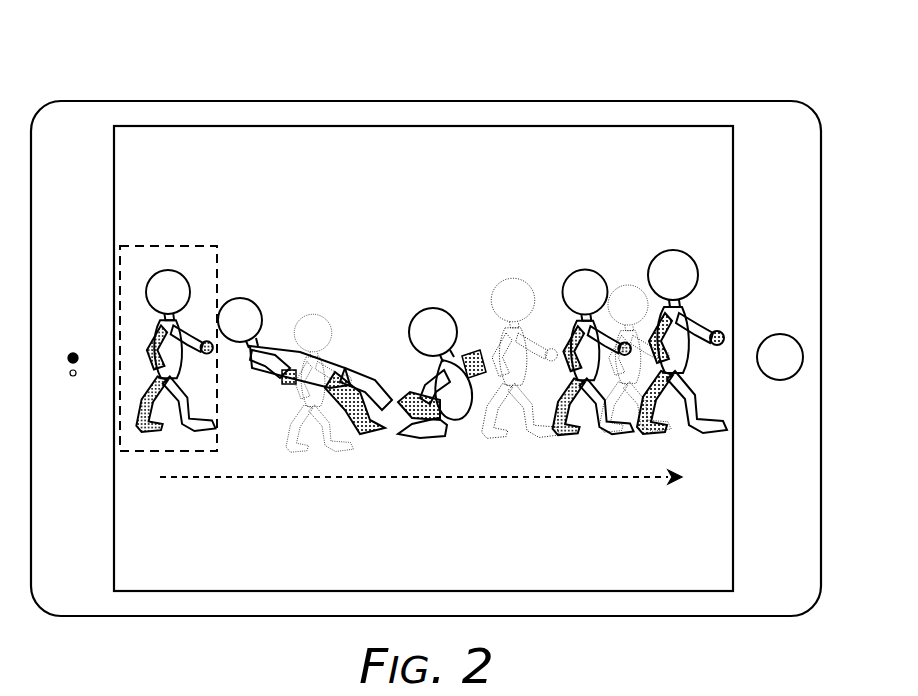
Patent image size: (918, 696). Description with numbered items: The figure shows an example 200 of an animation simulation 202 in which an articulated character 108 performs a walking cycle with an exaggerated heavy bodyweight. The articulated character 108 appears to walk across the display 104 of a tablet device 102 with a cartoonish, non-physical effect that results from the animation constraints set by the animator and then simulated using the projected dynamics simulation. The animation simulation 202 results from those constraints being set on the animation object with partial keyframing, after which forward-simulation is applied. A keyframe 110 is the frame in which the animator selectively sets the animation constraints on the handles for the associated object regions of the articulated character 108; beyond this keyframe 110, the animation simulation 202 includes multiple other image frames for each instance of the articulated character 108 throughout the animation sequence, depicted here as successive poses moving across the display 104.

The example 200 is at (577, 68).
The tablet device 102 is at (706, 101).
The display 104 is at (373, 142).
The articulated character 108 is at (169, 257).
The keyframe 110 is at (220, 266).
The animation simulation 202 is at (443, 512).